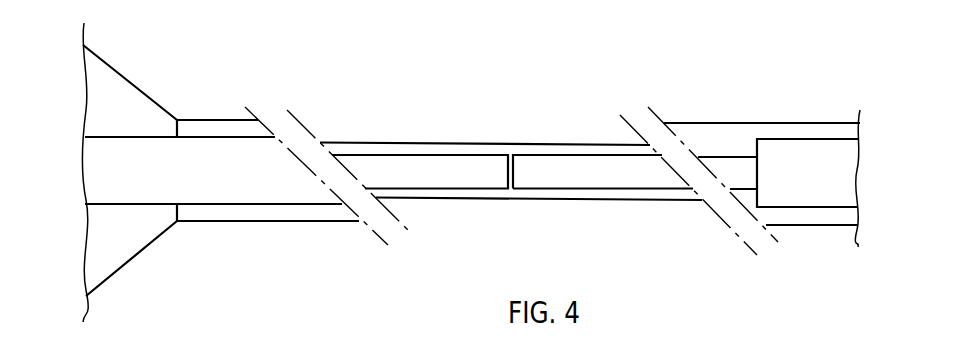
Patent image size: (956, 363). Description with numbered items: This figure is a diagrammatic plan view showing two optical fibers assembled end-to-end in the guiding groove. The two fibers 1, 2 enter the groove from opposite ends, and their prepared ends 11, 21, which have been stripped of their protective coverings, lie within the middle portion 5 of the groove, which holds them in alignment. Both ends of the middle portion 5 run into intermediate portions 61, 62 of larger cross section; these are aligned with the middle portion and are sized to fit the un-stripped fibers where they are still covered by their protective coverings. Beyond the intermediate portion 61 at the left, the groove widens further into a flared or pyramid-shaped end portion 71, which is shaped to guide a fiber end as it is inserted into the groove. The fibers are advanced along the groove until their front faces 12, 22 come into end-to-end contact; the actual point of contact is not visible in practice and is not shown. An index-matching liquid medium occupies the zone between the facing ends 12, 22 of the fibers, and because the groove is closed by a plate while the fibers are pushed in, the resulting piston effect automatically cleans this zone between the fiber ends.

The optical fiber 1 is at (202, 163).
The optical fiber 2 is at (812, 167).
The middle portion of the groove 5 is at (443, 143).
The prepared end of the first fiber 11 is at (383, 170).
The front face of the first fiber 12 is at (505, 170).
The prepared end of the second fiber 21 is at (718, 163).
The front face of the second fiber 22 is at (517, 170).
The intermediate portion of the groove 61 is at (228, 120).
The intermediate portion of the groove 62 is at (776, 121).
The flared end portion of the groove 71 is at (135, 84).